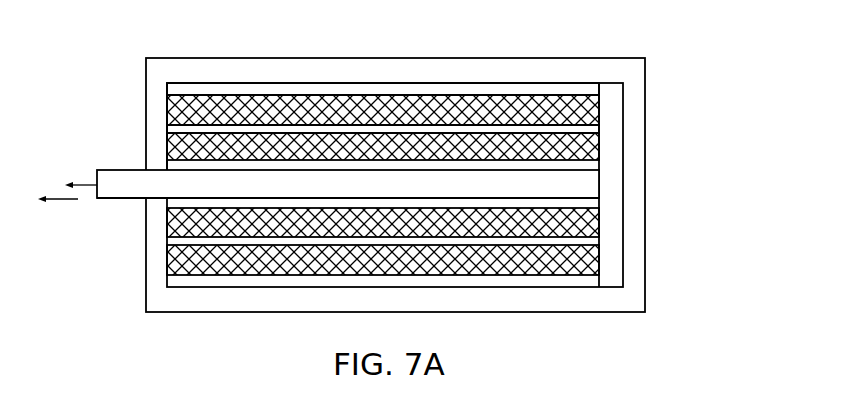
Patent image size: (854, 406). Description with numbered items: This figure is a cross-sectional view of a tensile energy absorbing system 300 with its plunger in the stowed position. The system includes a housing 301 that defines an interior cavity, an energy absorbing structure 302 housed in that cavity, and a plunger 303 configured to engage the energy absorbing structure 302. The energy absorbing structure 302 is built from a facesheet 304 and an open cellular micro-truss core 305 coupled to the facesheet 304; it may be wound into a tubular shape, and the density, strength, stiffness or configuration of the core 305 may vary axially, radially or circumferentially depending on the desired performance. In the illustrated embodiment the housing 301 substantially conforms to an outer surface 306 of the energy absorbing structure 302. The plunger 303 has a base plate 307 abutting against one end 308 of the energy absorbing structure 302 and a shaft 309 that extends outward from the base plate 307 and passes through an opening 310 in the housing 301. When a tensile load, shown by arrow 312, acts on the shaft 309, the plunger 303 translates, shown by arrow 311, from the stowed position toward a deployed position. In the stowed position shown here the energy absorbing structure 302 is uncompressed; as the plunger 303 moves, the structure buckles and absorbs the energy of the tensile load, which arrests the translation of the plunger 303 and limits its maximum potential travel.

The tensile energy absorbing system 300 is at (652, 33).
The housing 301 is at (453, 67).
The energy absorbing structure 302 is at (355, 100).
The plunger 303 is at (112, 180).
The facesheet 304 is at (215, 92).
The open cellular micro-truss core 305 is at (298, 115).
The outer surface 306 is at (552, 83).
The base plate 307 is at (615, 266).
The end 308 is at (600, 148).
The shaft 309 is at (135, 189).
The opening 310 is at (163, 167).
The translation arrow 311 is at (49, 201).
The tensile load arrow 312 is at (83, 184).